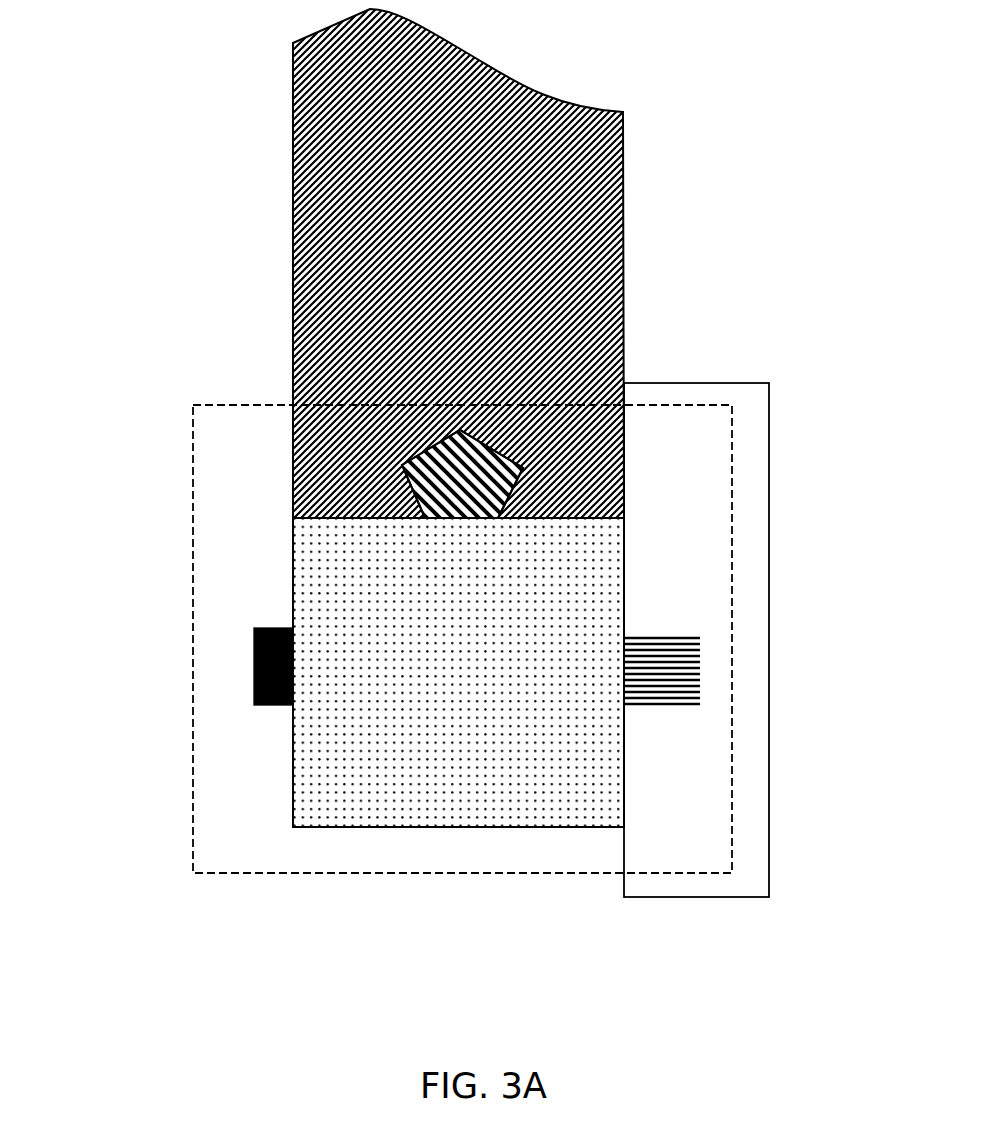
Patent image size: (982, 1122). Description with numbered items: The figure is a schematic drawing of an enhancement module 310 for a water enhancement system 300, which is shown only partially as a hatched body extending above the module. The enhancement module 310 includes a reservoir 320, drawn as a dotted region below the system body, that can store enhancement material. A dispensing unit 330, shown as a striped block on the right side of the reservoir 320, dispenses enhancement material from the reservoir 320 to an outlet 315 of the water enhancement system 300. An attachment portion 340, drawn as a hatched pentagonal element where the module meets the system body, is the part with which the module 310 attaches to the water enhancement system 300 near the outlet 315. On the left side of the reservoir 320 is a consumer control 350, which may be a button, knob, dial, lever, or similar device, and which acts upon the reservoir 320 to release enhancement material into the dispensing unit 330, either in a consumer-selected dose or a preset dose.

The water enhancement system 300 is at (485, 265).
The enhancement module 310 is at (163, 905).
The outlet 315 is at (750, 512).
The reservoir 320 is at (487, 674).
The dispensing unit 330 is at (675, 673).
The attachment portion 340 is at (458, 472).
The consumer control 350 is at (254, 658).